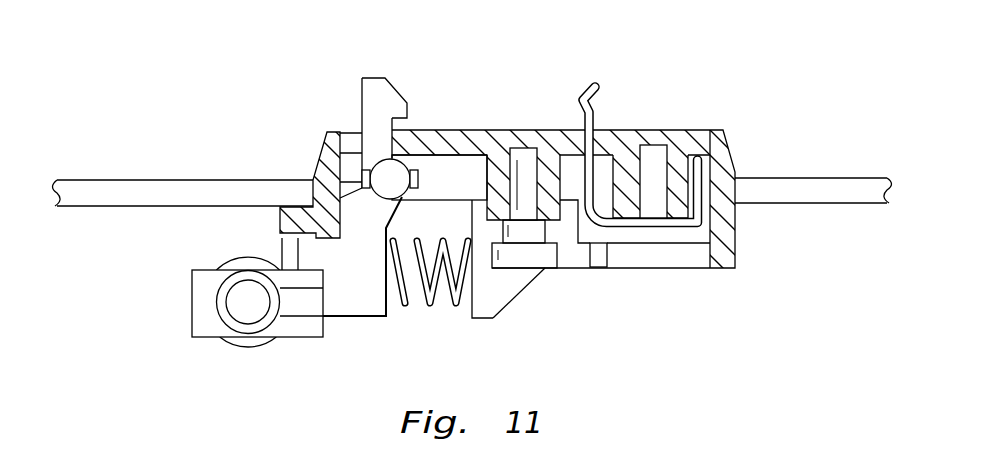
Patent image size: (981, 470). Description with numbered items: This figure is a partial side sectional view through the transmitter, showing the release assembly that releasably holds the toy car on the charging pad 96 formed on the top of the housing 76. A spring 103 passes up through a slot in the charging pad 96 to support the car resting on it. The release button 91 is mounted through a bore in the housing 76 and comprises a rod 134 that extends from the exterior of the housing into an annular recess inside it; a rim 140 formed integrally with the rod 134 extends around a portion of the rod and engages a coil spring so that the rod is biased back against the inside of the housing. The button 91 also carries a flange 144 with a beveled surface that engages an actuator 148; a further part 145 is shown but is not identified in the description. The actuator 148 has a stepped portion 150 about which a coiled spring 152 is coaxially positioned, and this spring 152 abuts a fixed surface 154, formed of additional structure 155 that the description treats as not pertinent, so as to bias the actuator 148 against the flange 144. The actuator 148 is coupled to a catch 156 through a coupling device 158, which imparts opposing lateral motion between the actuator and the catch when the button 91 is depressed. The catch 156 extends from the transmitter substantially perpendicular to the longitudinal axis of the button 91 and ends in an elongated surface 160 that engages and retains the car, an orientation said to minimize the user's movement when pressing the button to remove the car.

The housing 76 is at (102, 197).
The release button 91 is at (227, 316).
The charging pad 96 is at (320, 167).
The spring 103 is at (585, 85).
The rod 134 is at (242, 305).
The rim 140 is at (250, 343).
The flange 144 is at (198, 323).
The block portion 145 is at (298, 308).
The actuator 148 is at (352, 312).
The stepped portion 150 is at (415, 295).
The coiled spring 152 is at (460, 310).
The fixed surface 154 is at (470, 312).
The additional structure 155 is at (610, 275).
The catch 156 is at (386, 129).
The coupling device 158 is at (418, 178).
The elongated surface 160 is at (408, 107).